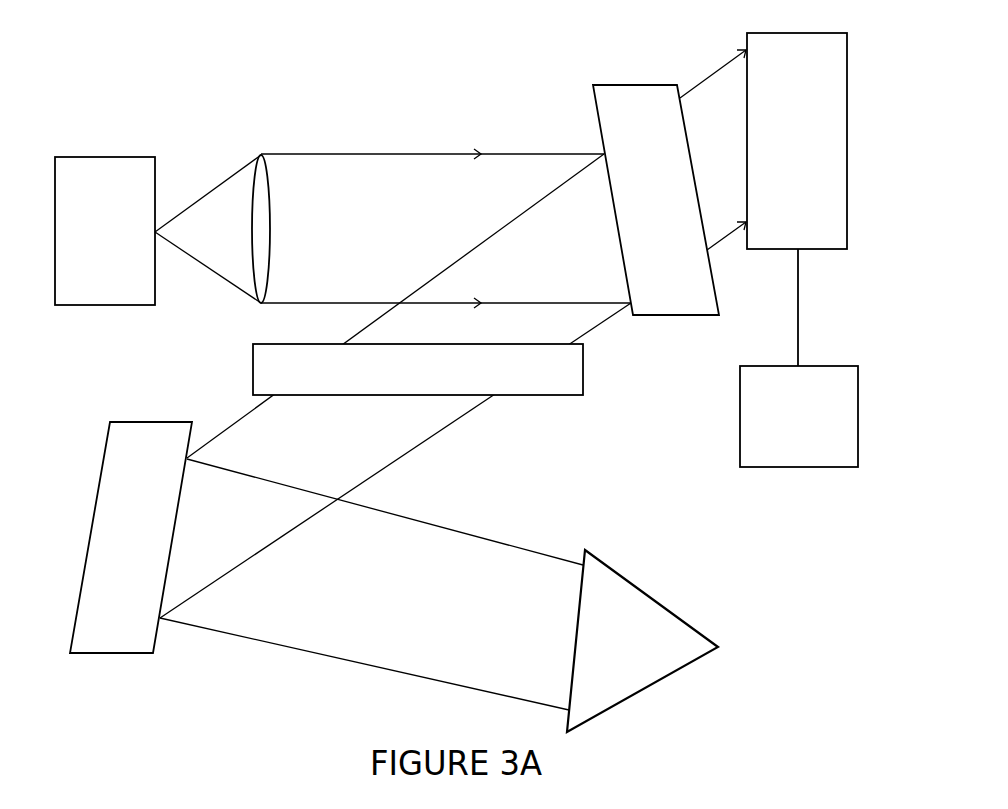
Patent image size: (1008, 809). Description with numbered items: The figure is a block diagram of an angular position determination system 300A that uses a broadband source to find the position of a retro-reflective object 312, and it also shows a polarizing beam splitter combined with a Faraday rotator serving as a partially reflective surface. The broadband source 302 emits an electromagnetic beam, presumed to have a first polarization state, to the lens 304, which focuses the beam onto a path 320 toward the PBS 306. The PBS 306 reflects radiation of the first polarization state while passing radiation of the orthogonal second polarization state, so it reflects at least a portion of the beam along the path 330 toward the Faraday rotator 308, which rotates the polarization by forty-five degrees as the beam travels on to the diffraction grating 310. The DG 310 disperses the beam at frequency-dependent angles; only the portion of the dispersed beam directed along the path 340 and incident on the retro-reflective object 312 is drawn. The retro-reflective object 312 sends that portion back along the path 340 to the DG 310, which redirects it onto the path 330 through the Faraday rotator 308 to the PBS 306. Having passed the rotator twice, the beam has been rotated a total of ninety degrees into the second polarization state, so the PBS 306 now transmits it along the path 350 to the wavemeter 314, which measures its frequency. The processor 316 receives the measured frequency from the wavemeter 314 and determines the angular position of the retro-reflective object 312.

The angular position determination system 300A is at (152, 62).
The broadband source 302 is at (86, 282).
The lens 304 is at (260, 155).
The polarizing beam splitter 306 is at (637, 226).
The Faraday rotator 308 is at (400, 392).
The diffraction grating 310 is at (113, 562).
The retro-reflective object 312 is at (622, 677).
The wavemeter 314 is at (779, 179).
The processor 316 is at (781, 441).
The path 320 is at (400, 153).
The path 330 is at (473, 248).
The path 340 is at (488, 537).
The path 350 is at (717, 75).